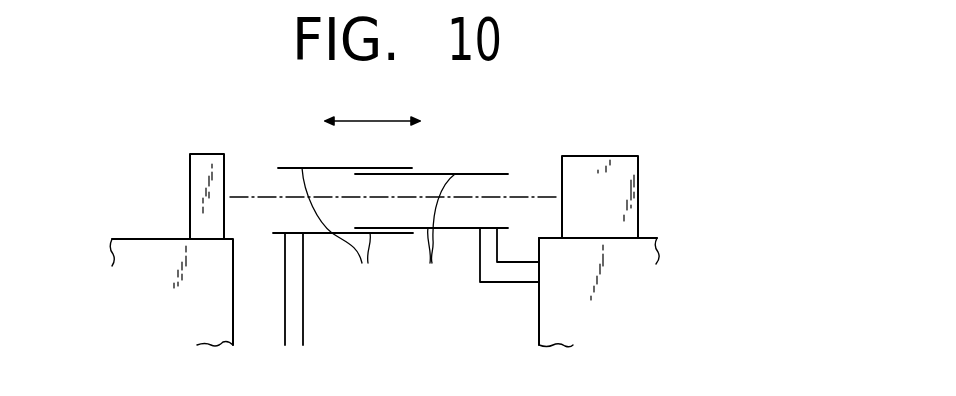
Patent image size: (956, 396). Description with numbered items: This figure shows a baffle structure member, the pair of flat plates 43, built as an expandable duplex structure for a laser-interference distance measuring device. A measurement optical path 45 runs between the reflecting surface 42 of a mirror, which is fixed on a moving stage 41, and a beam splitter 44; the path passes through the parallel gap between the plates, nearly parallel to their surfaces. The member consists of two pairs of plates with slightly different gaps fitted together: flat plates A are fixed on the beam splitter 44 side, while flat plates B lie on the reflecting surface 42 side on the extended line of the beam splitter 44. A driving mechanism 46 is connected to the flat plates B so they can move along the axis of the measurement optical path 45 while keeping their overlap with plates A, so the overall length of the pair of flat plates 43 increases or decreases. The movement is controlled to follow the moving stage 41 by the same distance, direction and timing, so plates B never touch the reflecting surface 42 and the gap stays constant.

The moving stage 41 is at (171, 292).
The reflecting surface 42 is at (226, 178).
The pair of flat plates 43 is at (450, 292).
The beam splitter 44 is at (599, 251).
The measurement optical path 45 is at (540, 197).
The driving mechanism 46 is at (303, 327).
The flat plates A is at (440, 235).
The flat plates B is at (338, 232).